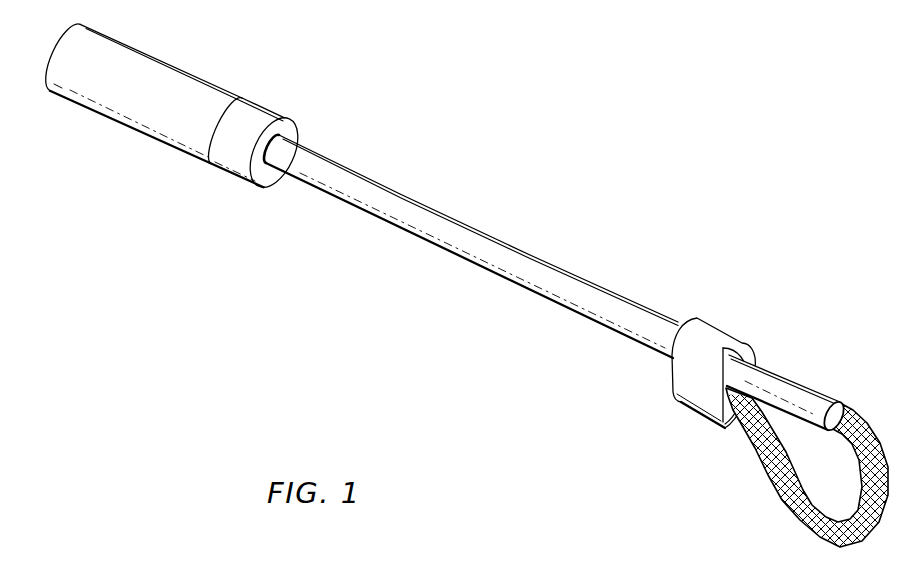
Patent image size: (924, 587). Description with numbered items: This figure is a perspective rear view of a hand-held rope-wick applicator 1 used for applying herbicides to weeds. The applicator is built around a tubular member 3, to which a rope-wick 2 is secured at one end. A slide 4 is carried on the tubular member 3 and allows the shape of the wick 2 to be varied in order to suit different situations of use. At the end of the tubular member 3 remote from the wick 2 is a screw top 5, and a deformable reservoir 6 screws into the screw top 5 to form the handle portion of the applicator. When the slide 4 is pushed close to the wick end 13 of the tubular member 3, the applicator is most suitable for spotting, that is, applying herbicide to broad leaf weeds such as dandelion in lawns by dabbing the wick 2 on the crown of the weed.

The hand-held rope-wick applicator 1 is at (444, 287).
The rope-wick 2 is at (773, 487).
The tubular member 3 is at (593, 302).
The slide 4 is at (693, 403).
The screw top 5 is at (243, 153).
The deformable reservoir 6 is at (137, 107).
The wick end 13 is at (843, 400).